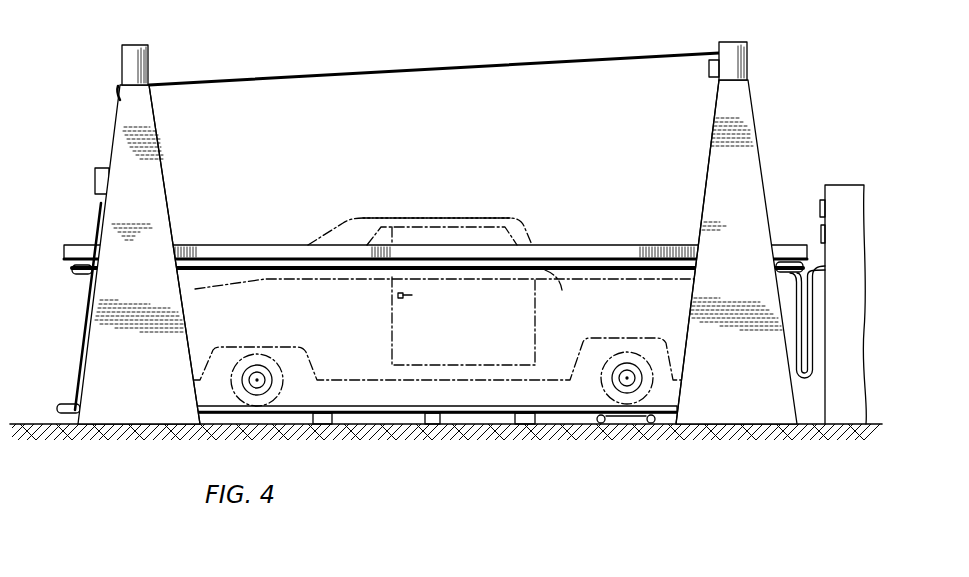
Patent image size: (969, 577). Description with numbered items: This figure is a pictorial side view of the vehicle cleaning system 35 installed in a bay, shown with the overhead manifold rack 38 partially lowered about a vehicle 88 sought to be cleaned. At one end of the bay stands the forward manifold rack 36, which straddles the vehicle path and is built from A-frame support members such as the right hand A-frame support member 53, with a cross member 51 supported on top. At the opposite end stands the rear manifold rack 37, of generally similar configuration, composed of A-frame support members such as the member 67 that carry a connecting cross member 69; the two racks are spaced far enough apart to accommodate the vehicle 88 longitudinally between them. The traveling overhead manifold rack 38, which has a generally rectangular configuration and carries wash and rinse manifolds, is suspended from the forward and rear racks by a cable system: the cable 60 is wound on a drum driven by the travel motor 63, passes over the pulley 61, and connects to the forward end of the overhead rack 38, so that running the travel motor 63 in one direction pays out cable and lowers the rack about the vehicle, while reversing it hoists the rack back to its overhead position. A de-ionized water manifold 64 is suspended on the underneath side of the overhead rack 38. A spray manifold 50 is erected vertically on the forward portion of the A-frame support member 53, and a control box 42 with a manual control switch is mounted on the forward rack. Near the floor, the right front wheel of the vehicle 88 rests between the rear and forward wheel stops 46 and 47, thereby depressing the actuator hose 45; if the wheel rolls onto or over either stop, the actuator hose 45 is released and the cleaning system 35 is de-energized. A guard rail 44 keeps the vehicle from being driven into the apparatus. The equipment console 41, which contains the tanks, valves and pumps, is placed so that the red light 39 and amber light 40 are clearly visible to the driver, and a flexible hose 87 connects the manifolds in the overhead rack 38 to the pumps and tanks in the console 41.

The cleaning system 35 is at (503, 169).
The forward manifold rack 36 is at (170, 191).
The rear manifold rack 37 is at (700, 176).
The overhead manifold rack 38 is at (252, 245).
The red light 39 is at (820, 205).
The amber light 40 is at (821, 230).
The equipment console 41 is at (845, 185).
The control box 42 is at (95, 176).
The right guard rail 44 is at (428, 414).
The actuator hose 45 is at (627, 422).
The rear wheel stop 46 is at (653, 418).
The forward wheel stop 47 is at (601, 424).
The spray manifold 50 is at (88, 322).
The cross member 51 is at (137, 45).
The A-frame support member 53 is at (169, 218).
The cable 60 is at (118, 101).
The pulley 61 is at (118, 88).
The travel motor 63 is at (708, 70).
The de-ionized water manifold 64 is at (631, 273).
The A-frame support member 67 is at (703, 205).
The cross member 69 is at (731, 42).
The hose 87 is at (814, 312).
The vehicle 88 is at (425, 216).